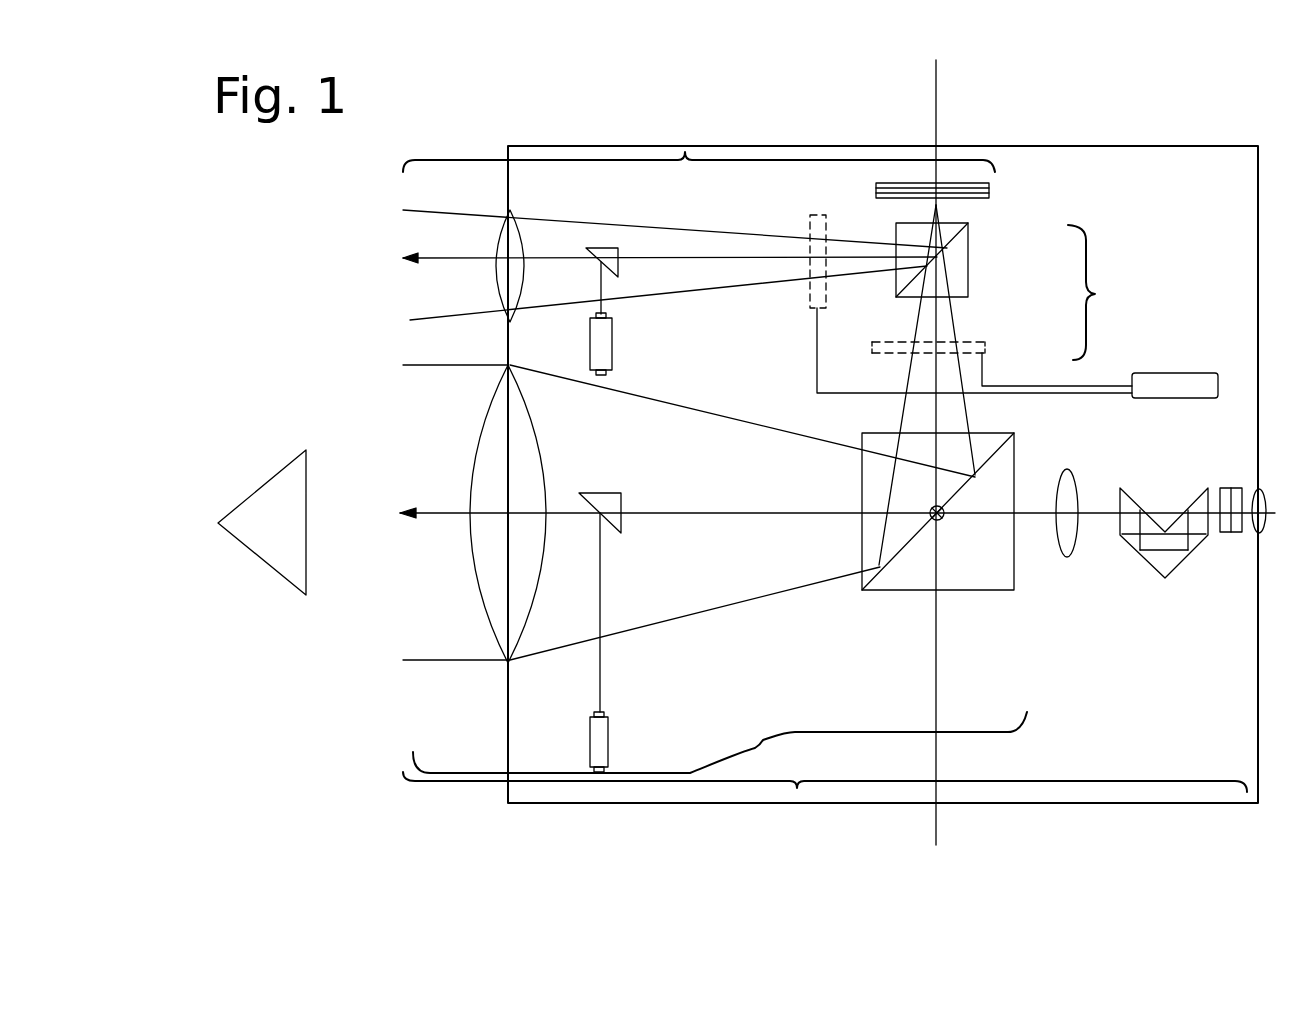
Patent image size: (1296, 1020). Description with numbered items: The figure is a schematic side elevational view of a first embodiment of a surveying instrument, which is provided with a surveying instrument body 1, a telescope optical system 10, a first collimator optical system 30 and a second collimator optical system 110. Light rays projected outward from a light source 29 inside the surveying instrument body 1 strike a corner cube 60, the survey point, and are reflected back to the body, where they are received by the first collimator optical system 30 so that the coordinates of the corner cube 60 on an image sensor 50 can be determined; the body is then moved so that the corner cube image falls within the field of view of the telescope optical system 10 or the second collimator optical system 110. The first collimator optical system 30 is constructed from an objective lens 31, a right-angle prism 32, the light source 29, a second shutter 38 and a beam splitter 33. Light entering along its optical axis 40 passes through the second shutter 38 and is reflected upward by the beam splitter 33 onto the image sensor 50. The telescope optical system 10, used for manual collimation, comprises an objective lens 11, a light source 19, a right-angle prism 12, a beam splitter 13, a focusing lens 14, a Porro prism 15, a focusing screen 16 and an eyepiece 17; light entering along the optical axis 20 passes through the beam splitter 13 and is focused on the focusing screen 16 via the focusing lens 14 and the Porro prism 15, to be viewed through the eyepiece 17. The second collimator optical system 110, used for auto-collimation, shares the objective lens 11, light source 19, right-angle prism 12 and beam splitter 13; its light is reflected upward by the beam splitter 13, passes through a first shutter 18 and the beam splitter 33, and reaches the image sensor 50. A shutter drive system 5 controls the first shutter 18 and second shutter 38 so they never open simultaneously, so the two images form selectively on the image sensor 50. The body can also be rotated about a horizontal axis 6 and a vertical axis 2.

The surveying instrument body 1 is at (1003, 803).
The optical axis 2 is at (936, 142).
The shutter drive system 5 is at (1152, 372).
The horizontal axis 6 is at (932, 520).
The telescope optical system 10 is at (797, 790).
The objective lens 11 is at (482, 632).
The right-angle prism 12 is at (617, 537).
The beam splitter 13 is at (1014, 590).
The focusing lens 14 is at (1067, 557).
The Porro prism 15 is at (1155, 565).
The focusing screen 16 is at (1222, 535).
The eyepiece 17 is at (1252, 535).
The first shutter 18 is at (985, 346).
The light source 19 is at (610, 715).
The optical axis 20 is at (710, 515).
The light source 29 is at (612, 345).
The first collimator optical system 30 is at (685, 150).
The objective lens 31 is at (518, 207).
The right-angle prism 32 is at (618, 265).
The beam splitter 33 is at (968, 265).
The second shutter 38 is at (806, 212).
The optical axis 40 is at (733, 260).
The image sensor 50 is at (989, 190).
The corner cube 60 is at (306, 580).
The second collimator optical system 110 is at (781, 500).